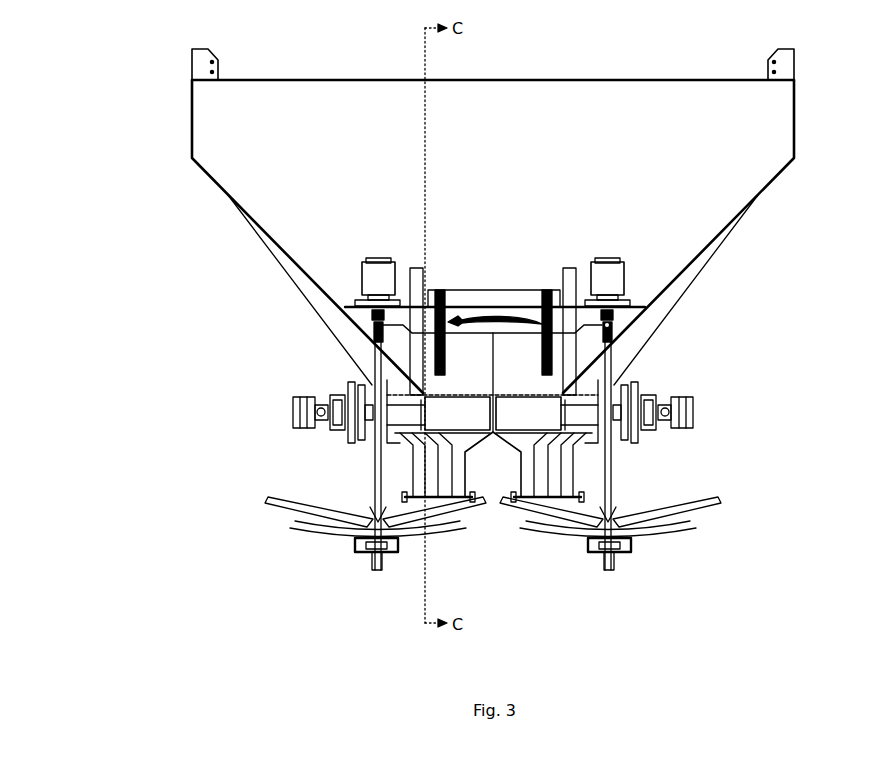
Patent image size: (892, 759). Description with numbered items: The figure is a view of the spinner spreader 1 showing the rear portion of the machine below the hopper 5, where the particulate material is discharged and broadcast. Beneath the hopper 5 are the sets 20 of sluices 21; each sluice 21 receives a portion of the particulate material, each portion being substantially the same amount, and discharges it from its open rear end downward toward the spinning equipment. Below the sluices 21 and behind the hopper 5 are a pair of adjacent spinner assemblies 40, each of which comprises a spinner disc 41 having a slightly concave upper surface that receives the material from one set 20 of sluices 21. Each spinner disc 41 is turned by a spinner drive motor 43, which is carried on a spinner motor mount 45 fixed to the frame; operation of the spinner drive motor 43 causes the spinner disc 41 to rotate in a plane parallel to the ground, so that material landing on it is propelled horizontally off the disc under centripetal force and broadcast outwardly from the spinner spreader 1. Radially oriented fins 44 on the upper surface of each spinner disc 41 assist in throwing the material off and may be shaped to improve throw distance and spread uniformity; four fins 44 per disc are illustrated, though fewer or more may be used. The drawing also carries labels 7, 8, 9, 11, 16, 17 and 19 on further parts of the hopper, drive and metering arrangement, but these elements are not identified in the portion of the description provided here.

The spinner spreader 1 is at (165, 303).
The hopper 5 is at (512, 78).
The hopper interior 7 is at (499, 177).
The agitator 8 is at (475, 358).
The partition wall 9 is at (498, 360).
The hopper wall 11 is at (335, 330).
The drive shaft 16 is at (585, 415).
The actuator 17 is at (692, 406).
The metering device 19 is at (547, 417).
The set of sluices 20 is at (580, 470).
The sluice 21 is at (557, 497).
The spinner assembly 40 is at (627, 578).
The spinner disc 41 is at (650, 535).
The spinner drive motor 43 is at (612, 281).
The fins 44 is at (705, 512).
The spinner motor mount 45 is at (625, 317).